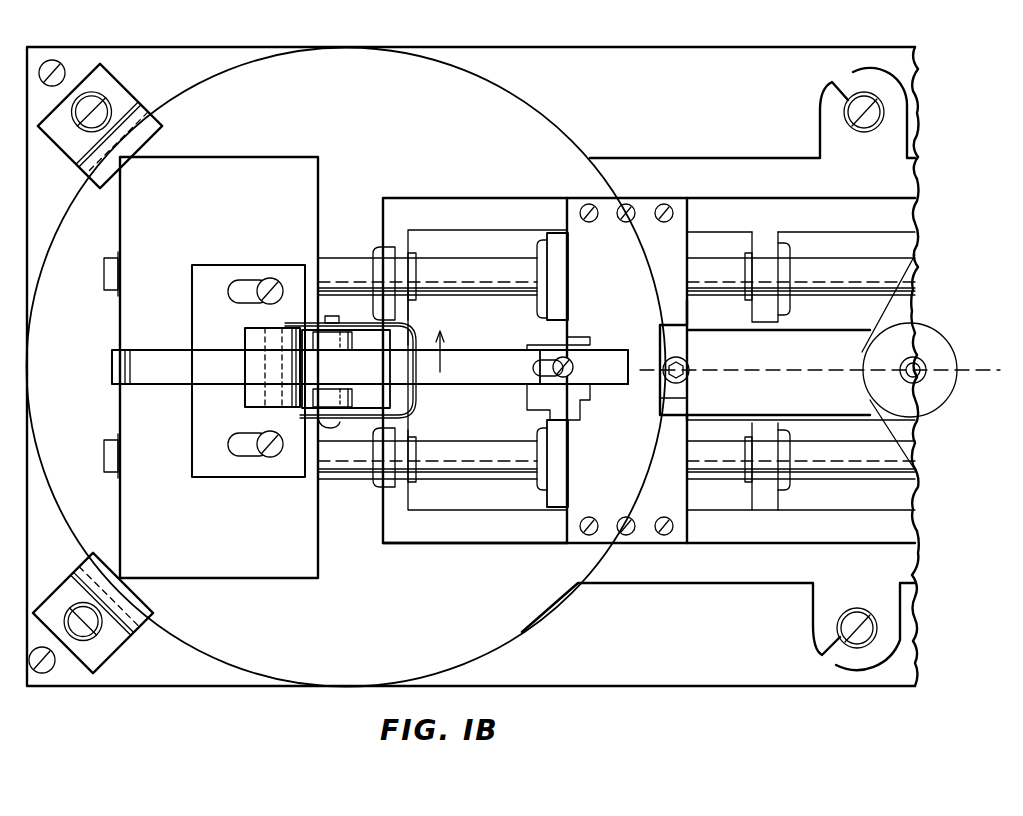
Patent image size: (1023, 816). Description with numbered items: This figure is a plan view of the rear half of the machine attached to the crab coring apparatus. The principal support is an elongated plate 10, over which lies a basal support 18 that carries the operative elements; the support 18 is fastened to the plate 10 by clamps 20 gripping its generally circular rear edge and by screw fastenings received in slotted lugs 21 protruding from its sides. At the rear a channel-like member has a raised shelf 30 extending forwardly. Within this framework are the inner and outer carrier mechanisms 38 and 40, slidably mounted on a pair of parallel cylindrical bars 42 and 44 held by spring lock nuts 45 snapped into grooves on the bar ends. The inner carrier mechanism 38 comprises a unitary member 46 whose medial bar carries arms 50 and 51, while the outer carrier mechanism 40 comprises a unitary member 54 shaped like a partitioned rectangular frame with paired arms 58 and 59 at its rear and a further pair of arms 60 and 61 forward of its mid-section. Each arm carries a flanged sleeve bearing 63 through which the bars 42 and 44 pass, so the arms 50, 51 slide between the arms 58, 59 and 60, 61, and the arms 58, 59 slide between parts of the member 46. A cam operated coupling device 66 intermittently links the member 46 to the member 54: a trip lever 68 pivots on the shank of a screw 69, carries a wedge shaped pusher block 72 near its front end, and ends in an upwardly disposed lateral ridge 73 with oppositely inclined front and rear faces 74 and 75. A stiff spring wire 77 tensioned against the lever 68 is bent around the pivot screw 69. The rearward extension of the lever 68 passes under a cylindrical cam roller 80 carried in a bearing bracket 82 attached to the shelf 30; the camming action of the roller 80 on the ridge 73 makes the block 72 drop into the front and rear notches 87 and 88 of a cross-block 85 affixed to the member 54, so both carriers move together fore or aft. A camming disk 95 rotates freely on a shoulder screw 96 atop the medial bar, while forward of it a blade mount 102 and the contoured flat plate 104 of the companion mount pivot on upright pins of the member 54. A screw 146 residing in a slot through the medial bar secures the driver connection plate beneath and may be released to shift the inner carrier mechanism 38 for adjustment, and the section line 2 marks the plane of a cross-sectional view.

The elongated plate 10 is at (680, 113).
The basal support 18 is at (674, 575).
The clamps 20 is at (105, 77).
The slotted lugs 21 is at (820, 118).
The raised shelf 30 is at (222, 216).
The inner carrier mechanism 38 is at (812, 332).
The outer carrier mechanism 40 is at (492, 200).
The cylindrical bar 42 is at (345, 266).
The cylindrical bar 44 is at (346, 468).
The spring lock nuts 45 is at (112, 258).
The unitary member 46 is at (540, 410).
The arm 50 is at (560, 262).
The arm 51 is at (550, 497).
The unitary member 54 is at (485, 543).
The arm 58 is at (396, 308).
The arm 59 is at (398, 427).
The arm 60 is at (752, 310).
The arm 61 is at (752, 496).
The flanged sleeve bearing 63 is at (417, 258).
The cam operated coupling device 66 is at (598, 362).
The trip lever 68 is at (490, 358).
The screw 69 is at (333, 422).
The wedge shaped pusher block 72 is at (548, 396).
The lateral ridge 73 is at (116, 385).
The front face 74 is at (128, 363).
The rear face 75 is at (120, 363).
The stiff spring wire 77 is at (420, 366).
The cylindrical cam roller 80 is at (245, 363).
The bearing bracket 82 is at (192, 313).
The cross-block 85 is at (647, 205).
The front notch 87 is at (664, 398).
The rear notch 88 is at (597, 403).
The camming disk 95 is at (868, 385).
The shoulder screw 96 is at (913, 358).
The blade mount 102 is at (918, 447).
The flat plate 104 is at (905, 300).
The screw 146 is at (690, 362).
The section line 2 is at (726, 360).